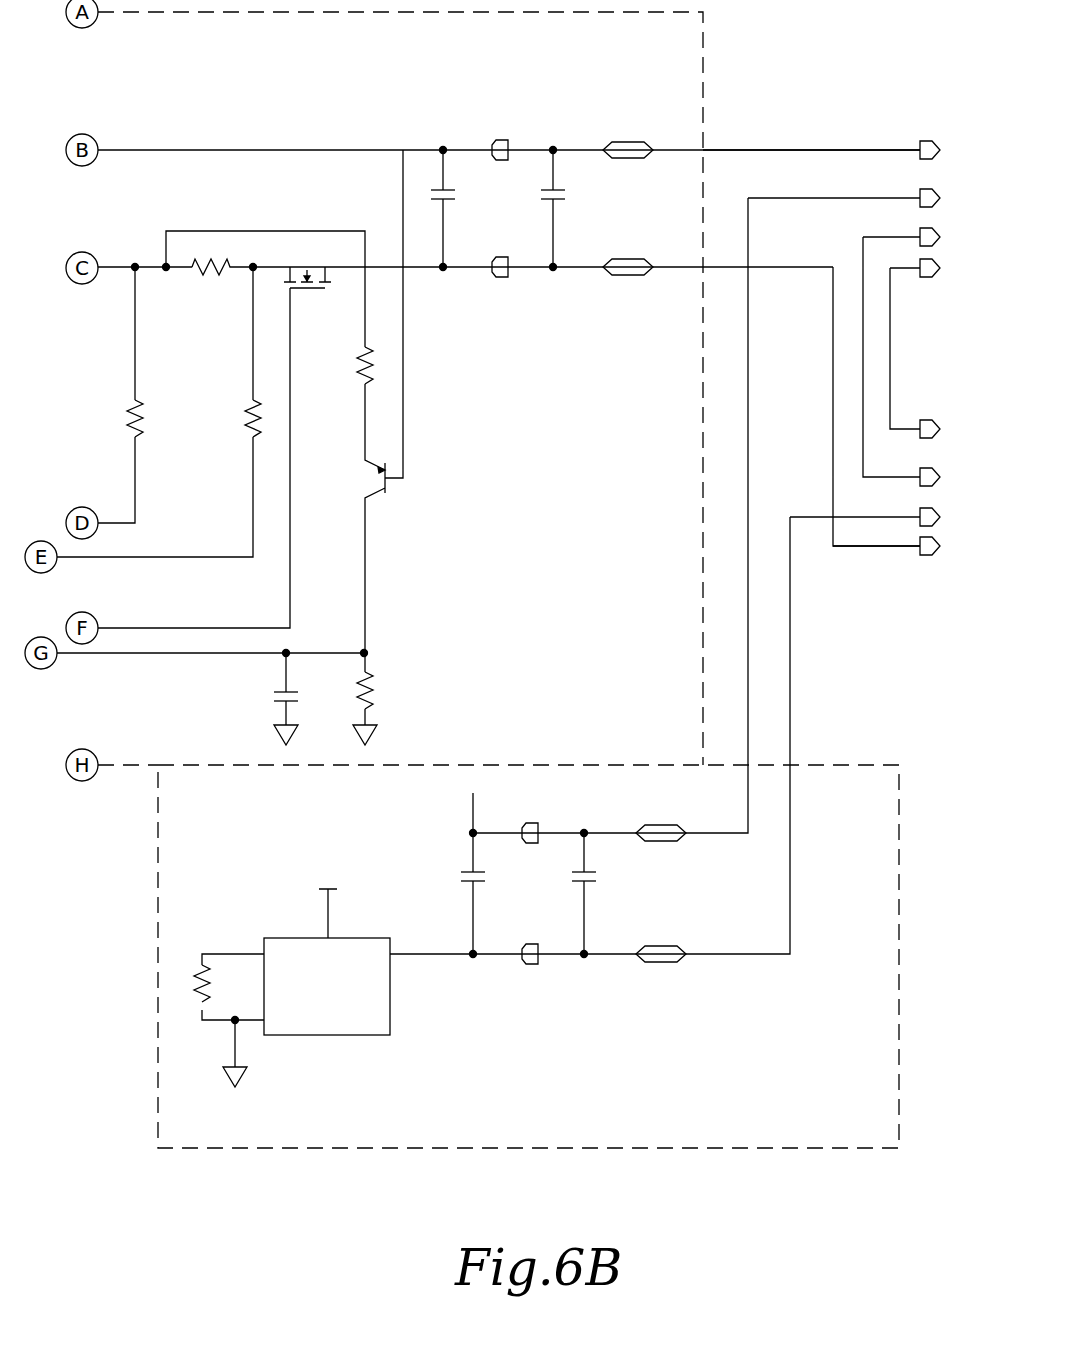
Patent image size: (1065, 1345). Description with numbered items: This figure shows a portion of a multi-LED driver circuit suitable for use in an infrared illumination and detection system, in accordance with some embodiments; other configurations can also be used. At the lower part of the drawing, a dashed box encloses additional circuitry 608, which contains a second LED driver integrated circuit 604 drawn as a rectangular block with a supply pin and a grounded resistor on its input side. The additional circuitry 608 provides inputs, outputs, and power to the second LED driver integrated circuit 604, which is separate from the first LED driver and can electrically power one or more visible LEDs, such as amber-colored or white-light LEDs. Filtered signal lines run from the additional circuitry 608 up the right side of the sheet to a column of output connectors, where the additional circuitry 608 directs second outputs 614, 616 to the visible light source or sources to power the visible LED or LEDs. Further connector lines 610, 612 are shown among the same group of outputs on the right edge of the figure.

The second LED driver integrated circuit 604 is at (330, 1035).
The additional circuitry 608 is at (530, 1148).
The signal connector 610 is at (775, 150).
The signal connector 612 is at (862, 546).
The second output 614 is at (833, 198).
The second output 616 is at (887, 517).